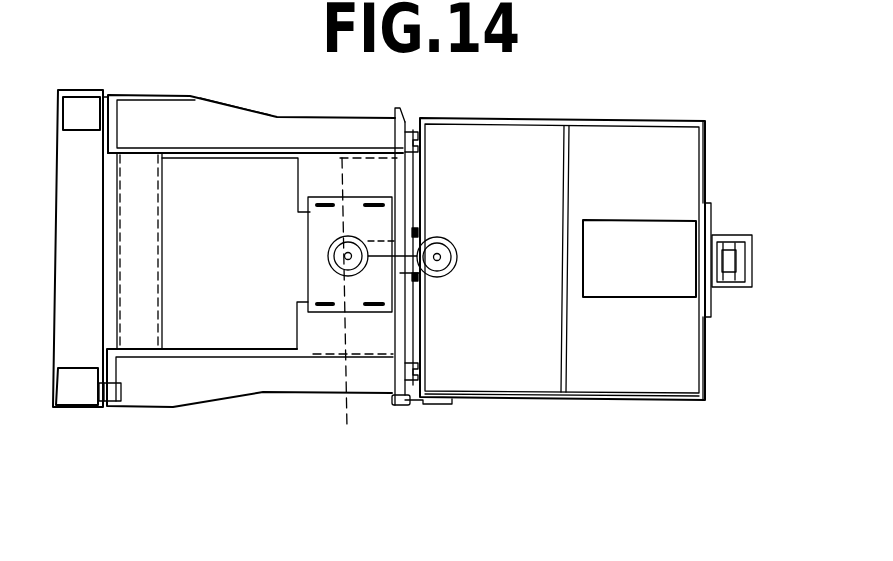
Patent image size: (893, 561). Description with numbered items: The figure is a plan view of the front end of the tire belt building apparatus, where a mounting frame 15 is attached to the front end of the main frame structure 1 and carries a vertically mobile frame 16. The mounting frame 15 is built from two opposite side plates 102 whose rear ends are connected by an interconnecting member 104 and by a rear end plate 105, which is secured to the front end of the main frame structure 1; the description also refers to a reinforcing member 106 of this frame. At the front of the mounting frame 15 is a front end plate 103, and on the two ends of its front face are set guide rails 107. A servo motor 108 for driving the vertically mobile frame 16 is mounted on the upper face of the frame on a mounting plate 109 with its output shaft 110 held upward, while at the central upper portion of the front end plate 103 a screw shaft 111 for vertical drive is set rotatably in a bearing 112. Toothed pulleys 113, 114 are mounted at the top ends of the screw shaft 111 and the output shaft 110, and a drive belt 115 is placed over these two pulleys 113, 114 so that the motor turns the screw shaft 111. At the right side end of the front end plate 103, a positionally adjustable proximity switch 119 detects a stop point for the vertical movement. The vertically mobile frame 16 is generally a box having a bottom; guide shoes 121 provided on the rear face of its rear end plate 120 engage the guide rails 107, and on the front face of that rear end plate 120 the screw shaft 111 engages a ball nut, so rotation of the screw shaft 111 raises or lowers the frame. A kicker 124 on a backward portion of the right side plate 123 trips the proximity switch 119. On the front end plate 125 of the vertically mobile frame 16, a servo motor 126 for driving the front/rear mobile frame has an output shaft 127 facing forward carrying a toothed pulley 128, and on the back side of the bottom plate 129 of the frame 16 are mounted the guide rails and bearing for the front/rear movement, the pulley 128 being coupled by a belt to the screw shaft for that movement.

The main frame structure 1 is at (75, 111).
The mounting frame 15 is at (237, 118).
The vertically mobile frame 16 is at (535, 148).
The side plates 102 is at (212, 117).
The front end plate 103 is at (405, 182).
The interconnecting member 104 is at (140, 273).
The rear end plate 105 is at (115, 97).
The arm inner wall 106 is at (187, 117).
The guide rails 107 is at (396, 118).
The servo motor 108 is at (352, 225).
The bracket 109 is at (310, 173).
The output shaft 110 is at (306, 276).
The screw shaft 111 is at (441, 276).
The bearing 112 is at (418, 230).
The toothed pulley 113 is at (330, 256).
The toothed pulley 114 is at (457, 256).
The drive belt 115 is at (348, 311).
The proximity switch 119 is at (407, 404).
The rear end plate 120 is at (425, 330).
The guide shoes 121 is at (418, 133).
The right side plate 123 is at (624, 400).
The kicker 124 is at (426, 412).
The front end plate 125 is at (708, 170).
The servo motor 126 is at (641, 260).
The output shaft 127 is at (715, 235).
The toothed pulley 128 is at (752, 272).
The bottom plate 129 is at (550, 352).